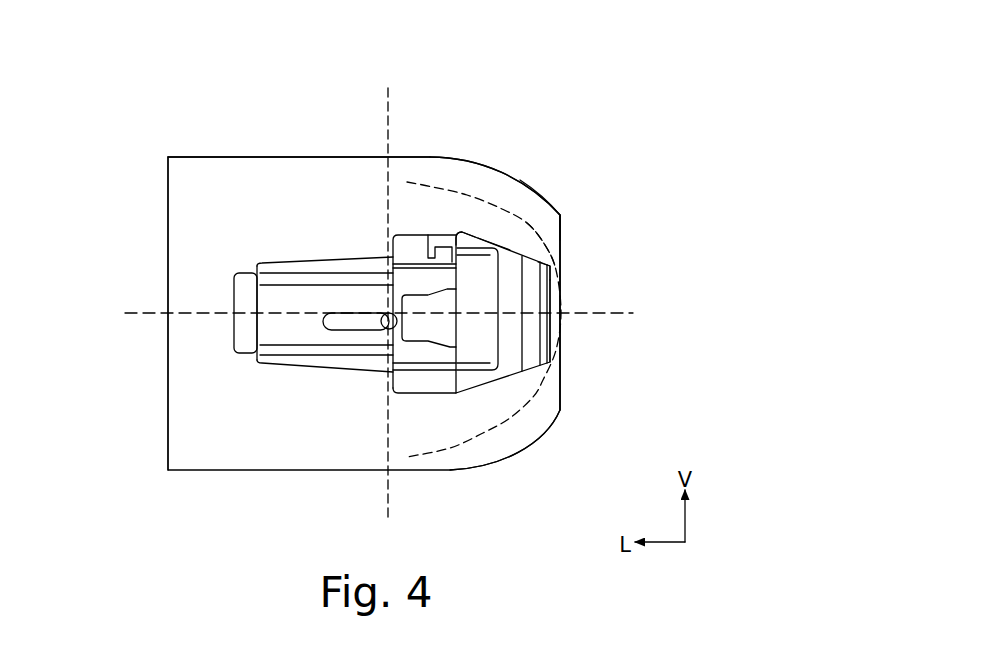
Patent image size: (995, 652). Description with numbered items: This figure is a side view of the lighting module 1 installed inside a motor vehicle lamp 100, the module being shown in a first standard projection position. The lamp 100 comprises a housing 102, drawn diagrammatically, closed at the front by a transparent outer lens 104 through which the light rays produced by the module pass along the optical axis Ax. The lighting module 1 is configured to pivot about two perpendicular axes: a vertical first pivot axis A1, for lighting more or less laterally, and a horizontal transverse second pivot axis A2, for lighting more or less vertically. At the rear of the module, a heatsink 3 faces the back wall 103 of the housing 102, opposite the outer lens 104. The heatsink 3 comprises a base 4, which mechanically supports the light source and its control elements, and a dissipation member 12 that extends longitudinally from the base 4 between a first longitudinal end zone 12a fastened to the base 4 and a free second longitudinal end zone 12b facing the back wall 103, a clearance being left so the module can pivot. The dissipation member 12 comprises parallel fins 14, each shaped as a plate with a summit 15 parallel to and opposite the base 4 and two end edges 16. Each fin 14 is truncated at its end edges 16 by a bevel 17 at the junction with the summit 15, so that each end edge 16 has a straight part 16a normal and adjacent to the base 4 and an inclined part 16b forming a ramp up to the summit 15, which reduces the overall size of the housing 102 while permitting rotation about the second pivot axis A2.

The lamp 100 is at (142, 117).
The housing 102 is at (243, 154).
The transparent outer lens 104 is at (168, 398).
The heatsink 3 is at (572, 75).
The lighting module 1 is at (298, 247).
The base 4 is at (458, 233).
The dissipation member 12 is at (460, 240).
The first longitudinal end zone 12a is at (452, 221).
The second longitudinal end zone 12b is at (558, 260).
The fin 14 is at (513, 334).
The summit 15 is at (558, 318).
The end edge 16 is at (540, 393).
The straight part 16a is at (493, 222).
The inclined part 16b is at (530, 240).
The bevel 17 is at (561, 218).
The back wall 103 is at (562, 242).
The optical axis Ax is at (135, 313).
The first pivot axis A1 is at (390, 493).
The second pivot axis A2 is at (383, 326).